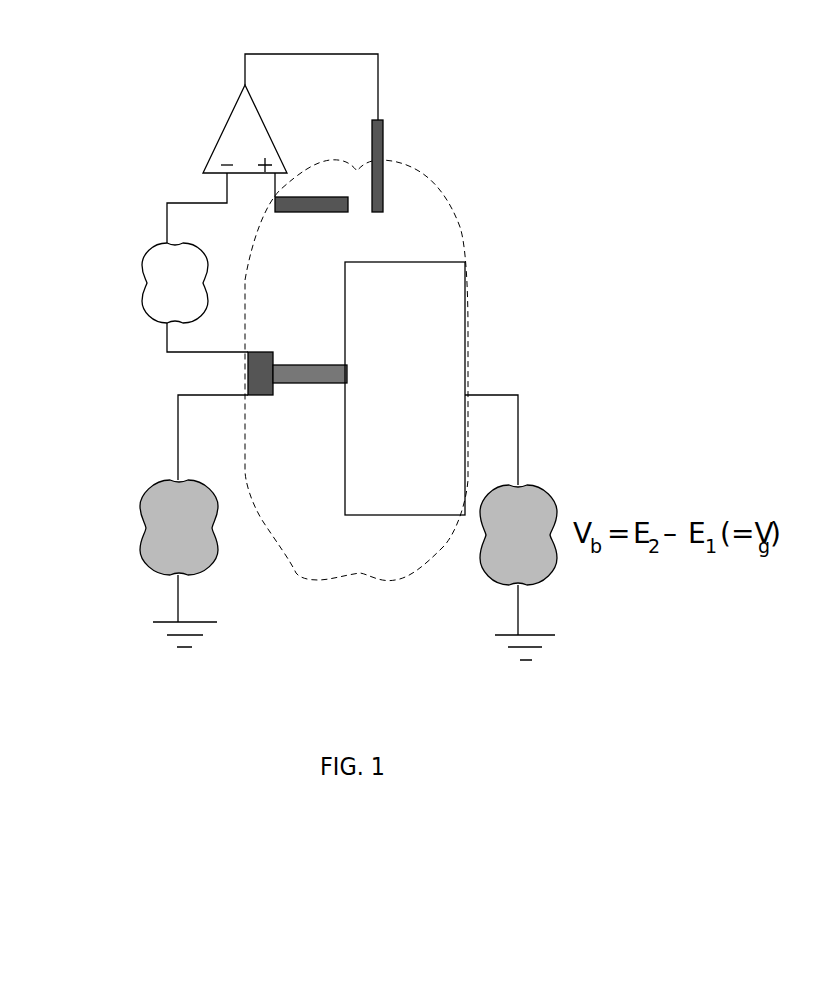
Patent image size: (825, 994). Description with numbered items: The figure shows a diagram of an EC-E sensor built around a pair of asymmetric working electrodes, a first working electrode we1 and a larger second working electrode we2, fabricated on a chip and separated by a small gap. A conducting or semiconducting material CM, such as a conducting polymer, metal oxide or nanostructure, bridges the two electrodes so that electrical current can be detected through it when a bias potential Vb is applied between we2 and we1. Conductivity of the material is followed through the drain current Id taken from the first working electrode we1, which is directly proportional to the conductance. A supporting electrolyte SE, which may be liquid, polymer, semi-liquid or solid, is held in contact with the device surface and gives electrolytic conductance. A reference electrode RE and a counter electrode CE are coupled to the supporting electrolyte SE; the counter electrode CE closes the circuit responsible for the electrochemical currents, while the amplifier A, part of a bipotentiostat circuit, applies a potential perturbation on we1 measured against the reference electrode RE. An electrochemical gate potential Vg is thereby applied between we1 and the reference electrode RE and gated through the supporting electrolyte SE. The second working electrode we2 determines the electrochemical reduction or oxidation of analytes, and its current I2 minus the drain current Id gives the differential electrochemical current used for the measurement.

The reference electrode RE is at (312, 185).
The counter electrode CE is at (414, 166).
The first working electrode we1 is at (231, 376).
The second working electrode we2 is at (412, 388).
The conducting or semiconducting material CM is at (308, 397).
The supporting electrolyte SE is at (417, 233).
The gate potential Vg is at (175, 283).
The amplifier A is at (179, 527).
The bias potential Vb is at (518, 535).
The drain current Id is at (153, 433).
The current from second working electrode I2 is at (495, 463).